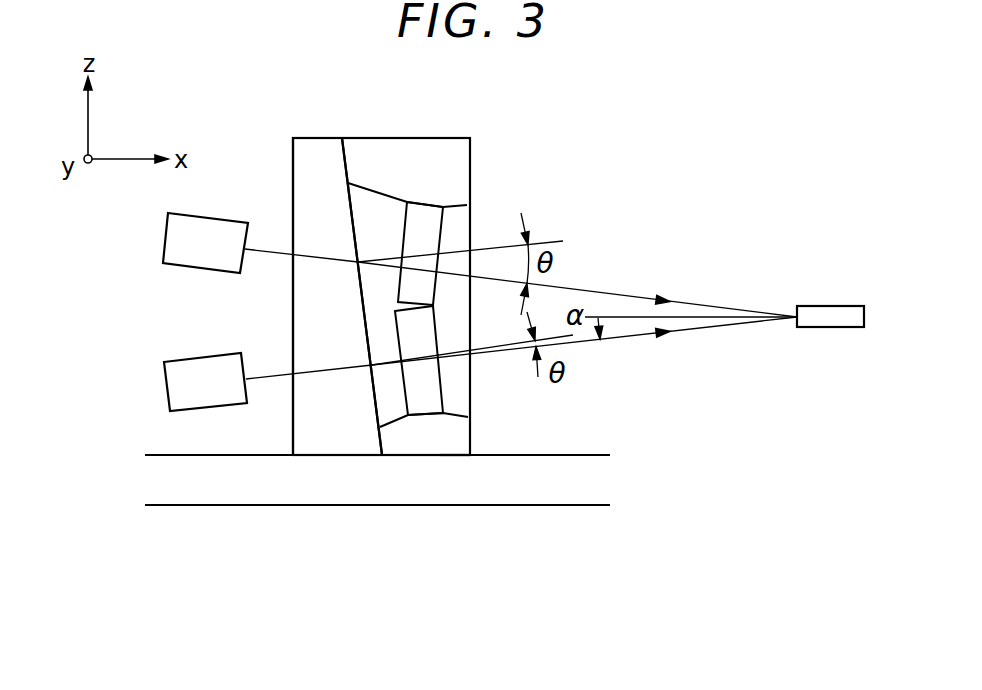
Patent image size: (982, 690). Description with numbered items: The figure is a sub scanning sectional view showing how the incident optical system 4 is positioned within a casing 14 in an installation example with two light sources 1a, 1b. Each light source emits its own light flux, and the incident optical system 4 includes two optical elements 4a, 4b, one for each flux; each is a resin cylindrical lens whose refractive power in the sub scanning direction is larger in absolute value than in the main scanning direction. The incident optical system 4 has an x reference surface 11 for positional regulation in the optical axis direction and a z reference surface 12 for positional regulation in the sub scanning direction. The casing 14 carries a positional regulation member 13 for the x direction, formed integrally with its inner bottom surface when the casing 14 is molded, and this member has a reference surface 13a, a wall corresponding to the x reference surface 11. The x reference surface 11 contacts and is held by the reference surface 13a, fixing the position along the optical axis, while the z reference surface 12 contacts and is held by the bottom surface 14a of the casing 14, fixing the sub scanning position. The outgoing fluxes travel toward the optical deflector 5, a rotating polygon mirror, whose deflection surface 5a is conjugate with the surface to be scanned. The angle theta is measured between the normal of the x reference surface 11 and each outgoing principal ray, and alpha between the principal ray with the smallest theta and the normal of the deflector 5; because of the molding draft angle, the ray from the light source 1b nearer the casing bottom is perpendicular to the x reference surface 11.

The light source 1a is at (166, 250).
The light source 1b is at (178, 380).
The incident optical system 4 is at (440, 191).
The optical element 4a is at (407, 230).
The optical element 4b is at (405, 327).
The optical deflector 5 is at (837, 310).
The deflection surface 5a is at (792, 322).
The x reference surface 11 is at (347, 165).
The z reference surface 12 is at (422, 457).
The positional regulation member 13 is at (317, 150).
The reference surface 13a is at (360, 400).
The casing 14 is at (517, 493).
The bottom surface 14a is at (447, 457).